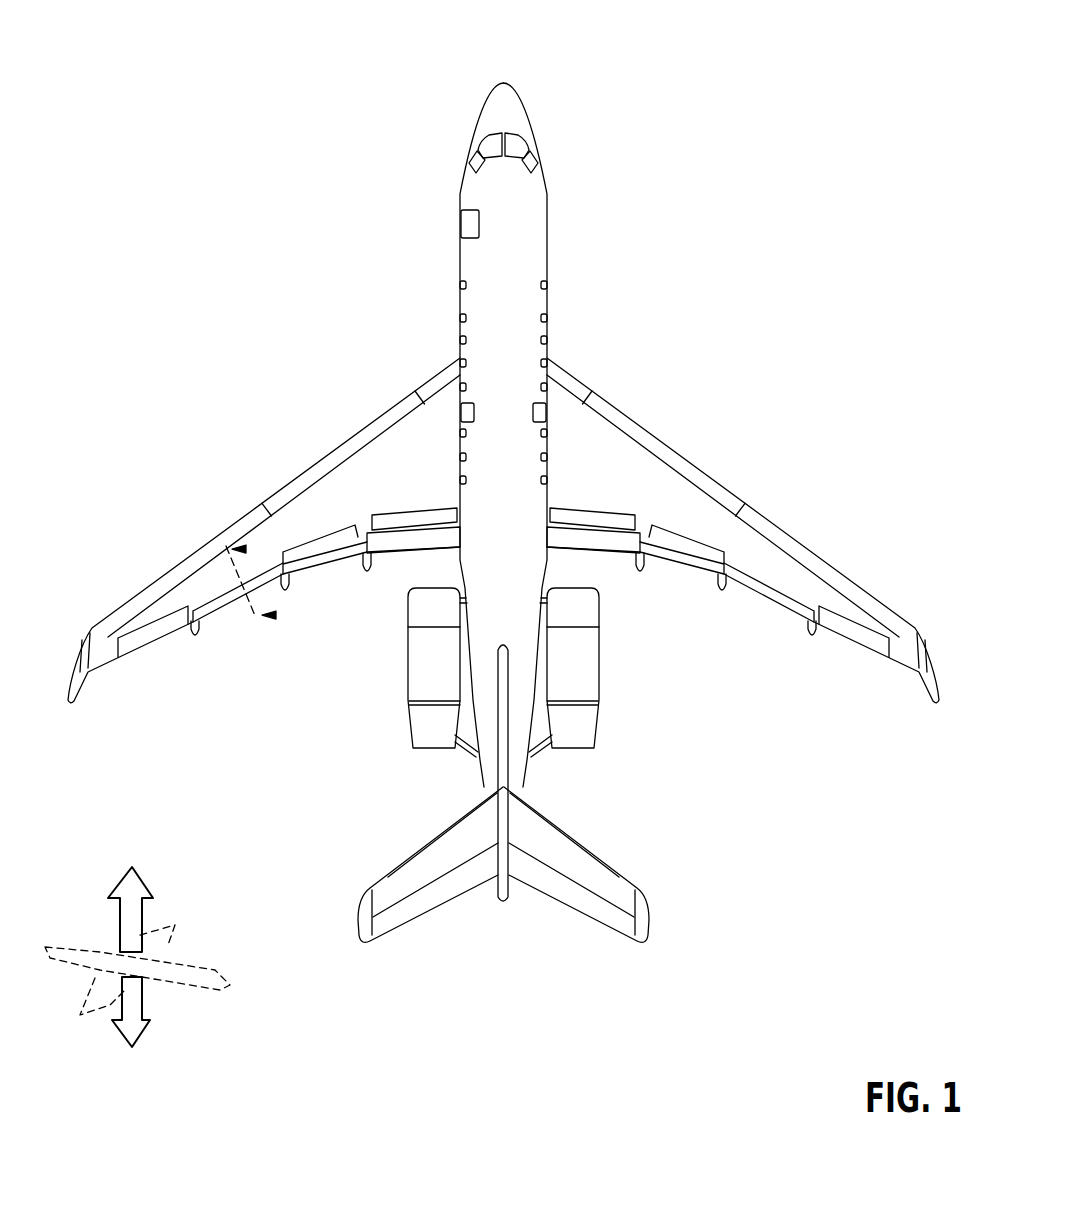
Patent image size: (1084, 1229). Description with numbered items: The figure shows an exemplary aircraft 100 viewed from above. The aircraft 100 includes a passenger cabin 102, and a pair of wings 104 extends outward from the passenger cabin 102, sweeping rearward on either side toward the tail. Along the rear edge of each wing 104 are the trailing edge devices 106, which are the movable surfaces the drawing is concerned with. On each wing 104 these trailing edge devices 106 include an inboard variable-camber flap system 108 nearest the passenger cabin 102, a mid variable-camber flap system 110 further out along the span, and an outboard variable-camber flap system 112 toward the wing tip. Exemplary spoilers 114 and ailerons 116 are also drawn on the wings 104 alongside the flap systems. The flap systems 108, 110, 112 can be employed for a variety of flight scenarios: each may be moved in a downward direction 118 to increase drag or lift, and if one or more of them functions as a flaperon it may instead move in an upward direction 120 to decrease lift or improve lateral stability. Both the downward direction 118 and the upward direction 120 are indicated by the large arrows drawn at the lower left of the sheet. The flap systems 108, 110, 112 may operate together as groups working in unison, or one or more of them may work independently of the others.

The aircraft 100 is at (220, 42).
The passenger cabin 102 is at (547, 230).
The wings 104 is at (232, 345).
The trailing edge devices 106 is at (880, 760).
The inboard variable-camber flap system 108 is at (407, 540).
The mid variable-camber flap system 110 is at (318, 540).
The outboard variable-camber flap system 112 is at (198, 607).
The spoilers 114 is at (428, 517).
The ailerons 116 is at (118, 645).
The downward direction 118 is at (142, 995).
The upward direction 120 is at (142, 908).